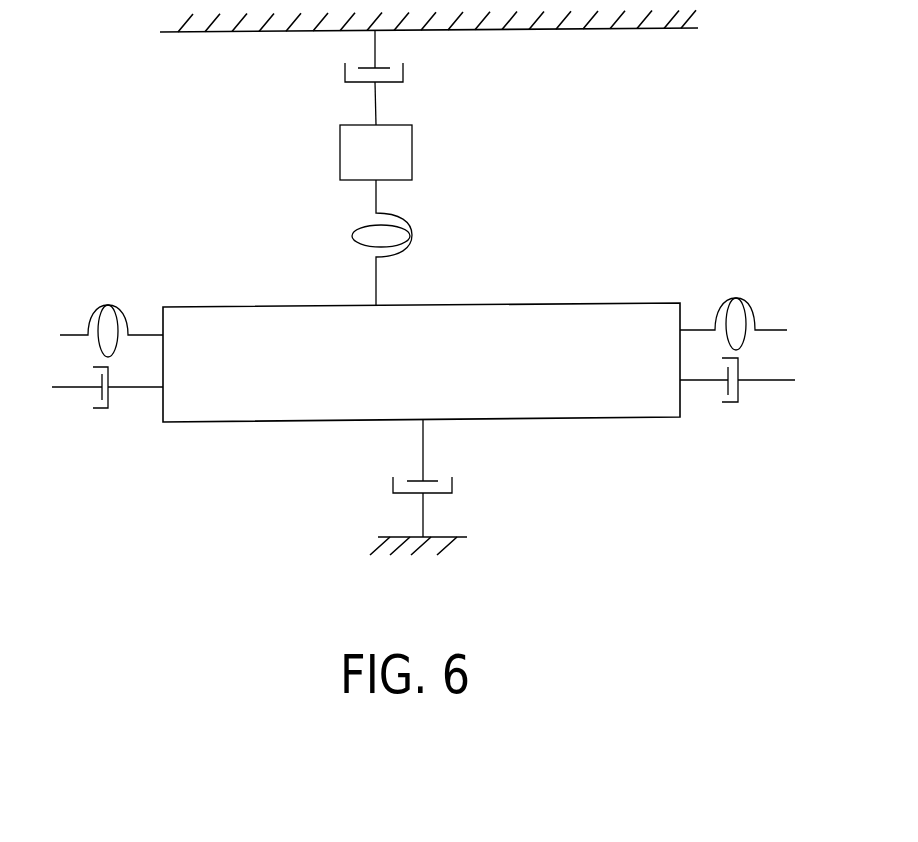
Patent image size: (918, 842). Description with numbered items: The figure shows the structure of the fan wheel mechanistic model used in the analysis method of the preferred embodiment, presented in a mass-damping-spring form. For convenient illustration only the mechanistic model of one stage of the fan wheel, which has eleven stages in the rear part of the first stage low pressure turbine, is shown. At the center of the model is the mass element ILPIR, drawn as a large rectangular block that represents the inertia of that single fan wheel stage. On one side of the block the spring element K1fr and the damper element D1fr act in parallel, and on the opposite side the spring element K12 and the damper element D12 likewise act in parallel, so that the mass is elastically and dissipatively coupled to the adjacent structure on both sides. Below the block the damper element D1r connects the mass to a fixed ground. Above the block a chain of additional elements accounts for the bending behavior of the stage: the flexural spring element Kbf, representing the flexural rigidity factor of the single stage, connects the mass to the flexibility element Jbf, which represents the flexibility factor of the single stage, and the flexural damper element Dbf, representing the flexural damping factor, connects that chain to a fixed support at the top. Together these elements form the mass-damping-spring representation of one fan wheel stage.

The flexural damper element Dbf is at (399, 89).
The flexibility element Jbf is at (376, 152).
The flexural spring element Kbf is at (406, 243).
The mass element ILPIR is at (421, 362).
The spring element K1fr is at (99, 323).
The damper element D1fr is at (99, 377).
The spring element K12 is at (747, 317).
The damper element D12 is at (747, 369).
The damper element D1r is at (449, 478).